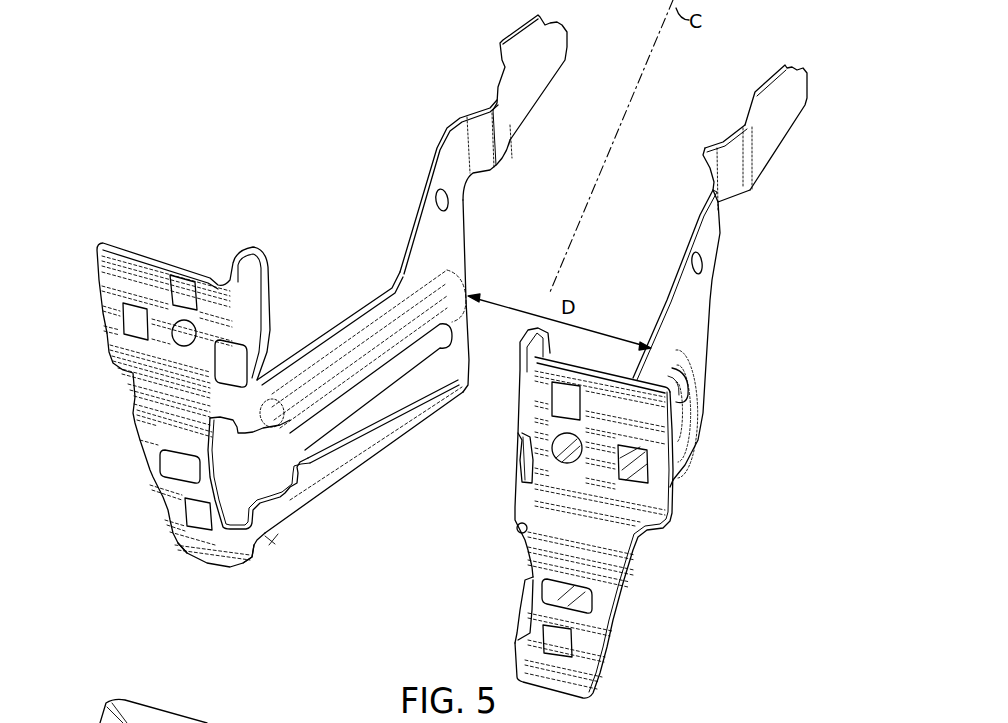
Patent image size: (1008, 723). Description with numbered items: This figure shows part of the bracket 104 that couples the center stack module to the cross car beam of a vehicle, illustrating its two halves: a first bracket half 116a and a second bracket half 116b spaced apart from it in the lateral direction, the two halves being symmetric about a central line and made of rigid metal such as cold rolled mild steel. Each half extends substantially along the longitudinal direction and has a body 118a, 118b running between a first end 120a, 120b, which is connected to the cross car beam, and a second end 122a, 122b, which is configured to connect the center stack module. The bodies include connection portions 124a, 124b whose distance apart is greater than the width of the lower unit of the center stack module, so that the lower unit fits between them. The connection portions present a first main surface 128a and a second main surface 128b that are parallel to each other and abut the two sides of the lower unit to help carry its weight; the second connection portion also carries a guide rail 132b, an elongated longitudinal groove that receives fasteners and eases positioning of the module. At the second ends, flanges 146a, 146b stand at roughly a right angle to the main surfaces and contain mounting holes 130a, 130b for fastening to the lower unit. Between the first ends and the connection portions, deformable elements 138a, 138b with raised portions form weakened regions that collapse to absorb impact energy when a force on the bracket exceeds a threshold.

The bracket 104 is at (256, 70).
The first bracket half 116a is at (716, 295).
The second bracket half 116b is at (412, 208).
The body 118a is at (688, 230).
The body 118b is at (435, 253).
The first end 120a is at (790, 93).
The first end 120b is at (547, 50).
The second end 122a is at (527, 550).
The second end 122b is at (272, 537).
The connection portion 124a is at (690, 437).
The connection portion 124b is at (347, 473).
The first main surface 128a is at (680, 377).
The second main surface 128b is at (357, 377).
The mounting hole 130a is at (530, 447).
The mounting hole 130b is at (180, 335).
The guide rail 132b is at (367, 398).
The deformable element 138a is at (731, 153).
The deformable element 138b is at (507, 143).
The flange 146a is at (608, 543).
The flange 146b is at (163, 433).